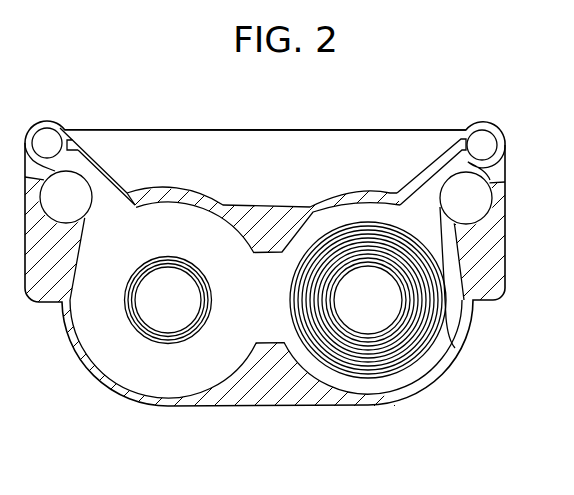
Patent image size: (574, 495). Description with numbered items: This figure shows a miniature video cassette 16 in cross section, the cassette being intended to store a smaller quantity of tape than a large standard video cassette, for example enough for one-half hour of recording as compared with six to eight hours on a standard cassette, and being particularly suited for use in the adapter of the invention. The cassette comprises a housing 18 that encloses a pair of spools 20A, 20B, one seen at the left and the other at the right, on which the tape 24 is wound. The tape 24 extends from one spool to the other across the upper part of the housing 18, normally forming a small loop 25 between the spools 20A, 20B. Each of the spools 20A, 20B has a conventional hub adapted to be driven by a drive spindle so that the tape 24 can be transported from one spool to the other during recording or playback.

The miniature video cassette 16 is at (232, 405).
The housing 18 is at (508, 265).
The spool 20A is at (133, 335).
The spool 20B is at (408, 378).
The tape 24 is at (331, 128).
The small loop 25 is at (392, 147).